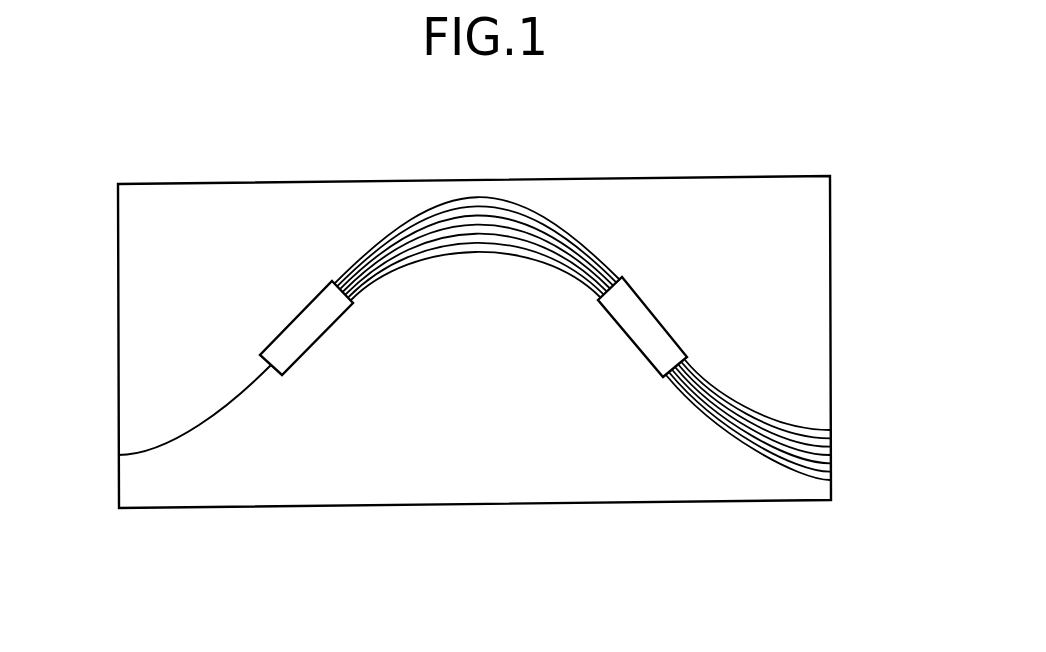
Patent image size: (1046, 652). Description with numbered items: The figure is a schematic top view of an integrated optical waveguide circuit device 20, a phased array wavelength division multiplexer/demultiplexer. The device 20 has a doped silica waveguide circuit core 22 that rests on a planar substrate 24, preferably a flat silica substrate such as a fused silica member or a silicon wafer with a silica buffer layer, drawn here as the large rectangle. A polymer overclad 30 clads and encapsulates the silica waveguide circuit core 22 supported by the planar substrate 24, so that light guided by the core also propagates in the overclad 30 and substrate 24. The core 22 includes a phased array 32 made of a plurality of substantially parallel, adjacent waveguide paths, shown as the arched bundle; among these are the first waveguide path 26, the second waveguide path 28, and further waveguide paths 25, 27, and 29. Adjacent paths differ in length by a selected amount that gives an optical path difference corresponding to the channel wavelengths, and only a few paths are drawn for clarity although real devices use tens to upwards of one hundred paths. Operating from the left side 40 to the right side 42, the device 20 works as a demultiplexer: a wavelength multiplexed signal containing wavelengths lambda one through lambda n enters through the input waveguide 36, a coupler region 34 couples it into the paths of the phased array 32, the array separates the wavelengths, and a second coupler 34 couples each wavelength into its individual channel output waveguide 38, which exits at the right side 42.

The integrated optical waveguide circuit device 20 is at (713, 106).
The silica waveguide circuit core 22 is at (335, 252).
The planar substrate 24 is at (273, 510).
The third waveguide path 25 is at (437, 250).
The first waveguide path 26 is at (425, 212).
The fourth waveguide path 27 is at (470, 237).
The second waveguide path 28 is at (462, 213).
The fifth waveguide path 29 is at (518, 242).
The polymer overclad 30 is at (219, 254).
The phased array 32 is at (562, 202).
The coupler region 34 is at (325, 338).
The input waveguide 36 is at (128, 461).
The output waveguides 38 is at (796, 483).
The left side 40 is at (102, 357).
The right side 42 is at (852, 348).